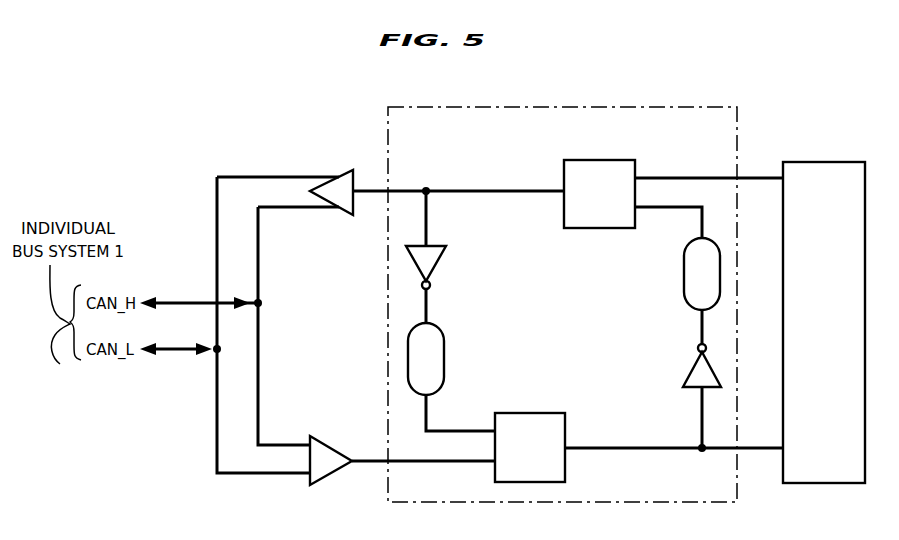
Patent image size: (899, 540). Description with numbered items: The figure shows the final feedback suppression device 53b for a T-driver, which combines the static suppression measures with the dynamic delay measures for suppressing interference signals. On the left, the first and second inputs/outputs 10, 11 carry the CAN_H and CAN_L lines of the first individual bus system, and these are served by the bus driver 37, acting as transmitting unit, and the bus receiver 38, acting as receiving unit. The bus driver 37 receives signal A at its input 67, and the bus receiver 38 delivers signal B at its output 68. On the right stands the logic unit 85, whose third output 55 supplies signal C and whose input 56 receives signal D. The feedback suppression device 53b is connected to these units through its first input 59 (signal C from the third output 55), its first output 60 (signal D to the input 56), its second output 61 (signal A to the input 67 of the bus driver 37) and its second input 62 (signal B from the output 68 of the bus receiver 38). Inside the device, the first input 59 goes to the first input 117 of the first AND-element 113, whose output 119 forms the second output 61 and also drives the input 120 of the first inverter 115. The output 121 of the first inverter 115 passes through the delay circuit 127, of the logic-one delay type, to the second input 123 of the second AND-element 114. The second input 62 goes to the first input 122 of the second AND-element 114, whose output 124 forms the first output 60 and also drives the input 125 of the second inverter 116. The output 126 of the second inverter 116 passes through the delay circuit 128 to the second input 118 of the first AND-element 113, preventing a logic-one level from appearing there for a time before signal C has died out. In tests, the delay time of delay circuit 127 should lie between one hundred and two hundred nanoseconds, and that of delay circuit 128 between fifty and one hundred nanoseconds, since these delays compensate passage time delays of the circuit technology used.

The first input/output 10 is at (216, 298).
The second input/output 11 is at (212, 355).
The bus driver 37 is at (346, 171).
The bus receiver 38 is at (333, 455).
The final feedback suppression device 1 53b is at (624, 108).
The third output of logic unit 55 is at (783, 177).
The input of logic unit 56 is at (779, 452).
The first input 59 is at (738, 177).
The first output 60 is at (737, 456).
The second output 61 is at (388, 190).
The second input 62 is at (390, 463).
The input of bus driver 67 is at (356, 184).
The output of bus receiver 68 is at (352, 459).
The logic unit 85 is at (823, 168).
The first AND-element 113 is at (590, 230).
The second AND-element 114 is at (531, 412).
The first inverter 115 is at (432, 262).
The second inverter 116 is at (695, 377).
The first input of first AND-element 117 is at (638, 178).
The second input of first AND-element 118 is at (638, 205).
The output of first AND-element 119 is at (563, 181).
The input of first inverter 120 is at (432, 247).
The output of first inverter 121 is at (432, 288).
The first input of second AND-element 122 is at (493, 460).
The second input of second AND-element 123 is at (494, 431).
The output of second AND-element 124 is at (567, 442).
The input of second inverter 125 is at (697, 392).
The output of second inverter 126 is at (698, 343).
The delay circuit 127 is at (442, 342).
The delay circuit 128 is at (684, 268).